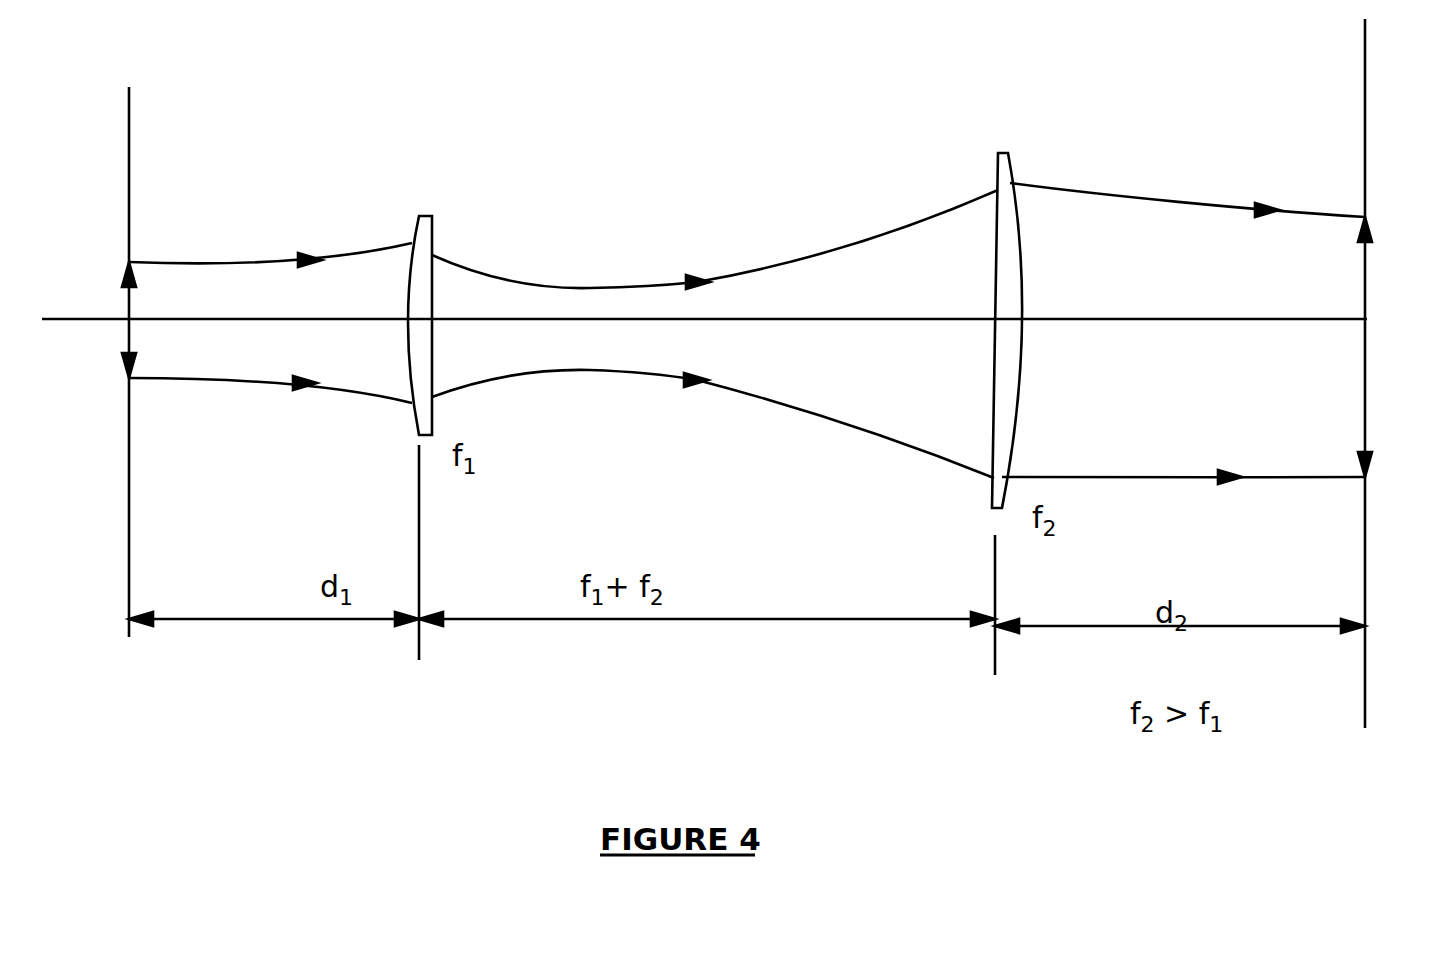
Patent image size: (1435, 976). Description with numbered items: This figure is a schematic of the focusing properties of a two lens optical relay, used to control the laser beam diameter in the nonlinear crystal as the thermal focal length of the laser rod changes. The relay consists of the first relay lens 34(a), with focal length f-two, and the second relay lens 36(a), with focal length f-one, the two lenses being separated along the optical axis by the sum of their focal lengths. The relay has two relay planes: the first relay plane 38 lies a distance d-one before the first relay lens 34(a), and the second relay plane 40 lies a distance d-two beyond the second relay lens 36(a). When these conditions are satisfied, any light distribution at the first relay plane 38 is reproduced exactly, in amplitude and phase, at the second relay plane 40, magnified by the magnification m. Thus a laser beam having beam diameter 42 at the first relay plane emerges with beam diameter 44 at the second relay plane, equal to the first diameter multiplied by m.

The first relay lens 34 is at (482, 203).
The second relay lens 36 is at (1010, 168).
The first relay plane 38 is at (131, 126).
The second relay plane 40 is at (1365, 46).
The beam diameter at first relay plane 42 is at (129, 345).
The beam diameter at second relay plane 44 is at (1365, 378).